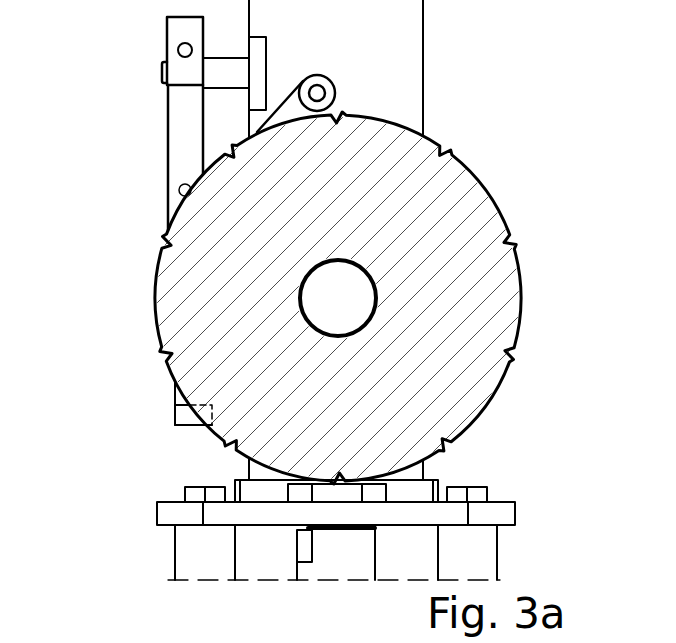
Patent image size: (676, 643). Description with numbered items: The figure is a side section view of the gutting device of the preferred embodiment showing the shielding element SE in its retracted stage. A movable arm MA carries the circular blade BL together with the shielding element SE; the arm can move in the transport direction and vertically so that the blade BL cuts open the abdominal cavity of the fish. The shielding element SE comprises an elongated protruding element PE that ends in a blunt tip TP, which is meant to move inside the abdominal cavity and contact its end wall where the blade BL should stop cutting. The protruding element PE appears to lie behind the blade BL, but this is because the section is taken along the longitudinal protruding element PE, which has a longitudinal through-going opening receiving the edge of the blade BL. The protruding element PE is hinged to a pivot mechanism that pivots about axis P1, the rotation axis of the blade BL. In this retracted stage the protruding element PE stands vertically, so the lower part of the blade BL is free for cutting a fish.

The shielding element SE is at (152, 123).
The protruding element PE is at (183, 157).
The movable arm MA is at (306, 83).
The blade BL is at (338, 298).
The axis P1 is at (338, 298).
The blunt tip TP is at (175, 415).